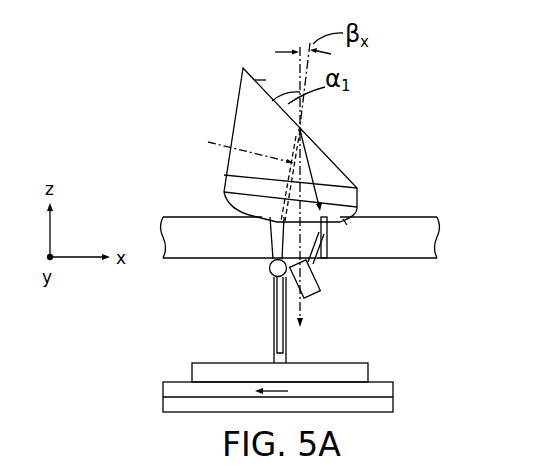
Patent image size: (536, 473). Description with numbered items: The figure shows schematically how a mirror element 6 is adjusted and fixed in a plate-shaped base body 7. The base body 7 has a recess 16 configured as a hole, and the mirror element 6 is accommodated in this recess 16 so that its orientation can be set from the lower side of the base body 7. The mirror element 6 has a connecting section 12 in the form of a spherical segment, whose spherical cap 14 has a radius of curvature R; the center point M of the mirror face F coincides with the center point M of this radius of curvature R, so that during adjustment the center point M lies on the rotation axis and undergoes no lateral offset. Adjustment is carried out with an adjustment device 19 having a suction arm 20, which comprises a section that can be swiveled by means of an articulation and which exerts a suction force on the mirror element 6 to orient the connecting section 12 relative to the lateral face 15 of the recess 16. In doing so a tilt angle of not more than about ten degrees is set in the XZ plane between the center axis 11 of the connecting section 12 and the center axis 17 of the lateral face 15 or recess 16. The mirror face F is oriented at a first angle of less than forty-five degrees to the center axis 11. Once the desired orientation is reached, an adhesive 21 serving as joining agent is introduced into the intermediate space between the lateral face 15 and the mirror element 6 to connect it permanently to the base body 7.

The mirror element 6 is at (231, 114).
The plate-shaped base body 7 is at (205, 238).
The center axis of the connecting section 11 is at (237, 143).
The connecting section 12 is at (240, 207).
The spherical cap 14 is at (345, 222).
The lateral face 15 is at (258, 216).
The recess 16 is at (322, 245).
The center axis of the lateral face 17 is at (313, 150).
The adjustment device 19 is at (358, 359).
The suction arm 20 is at (272, 323).
The adhesive 21 is at (328, 226).
The mirror face F is at (257, 80).
The center point M is at (302, 127).
The radius of curvature R is at (358, 181).